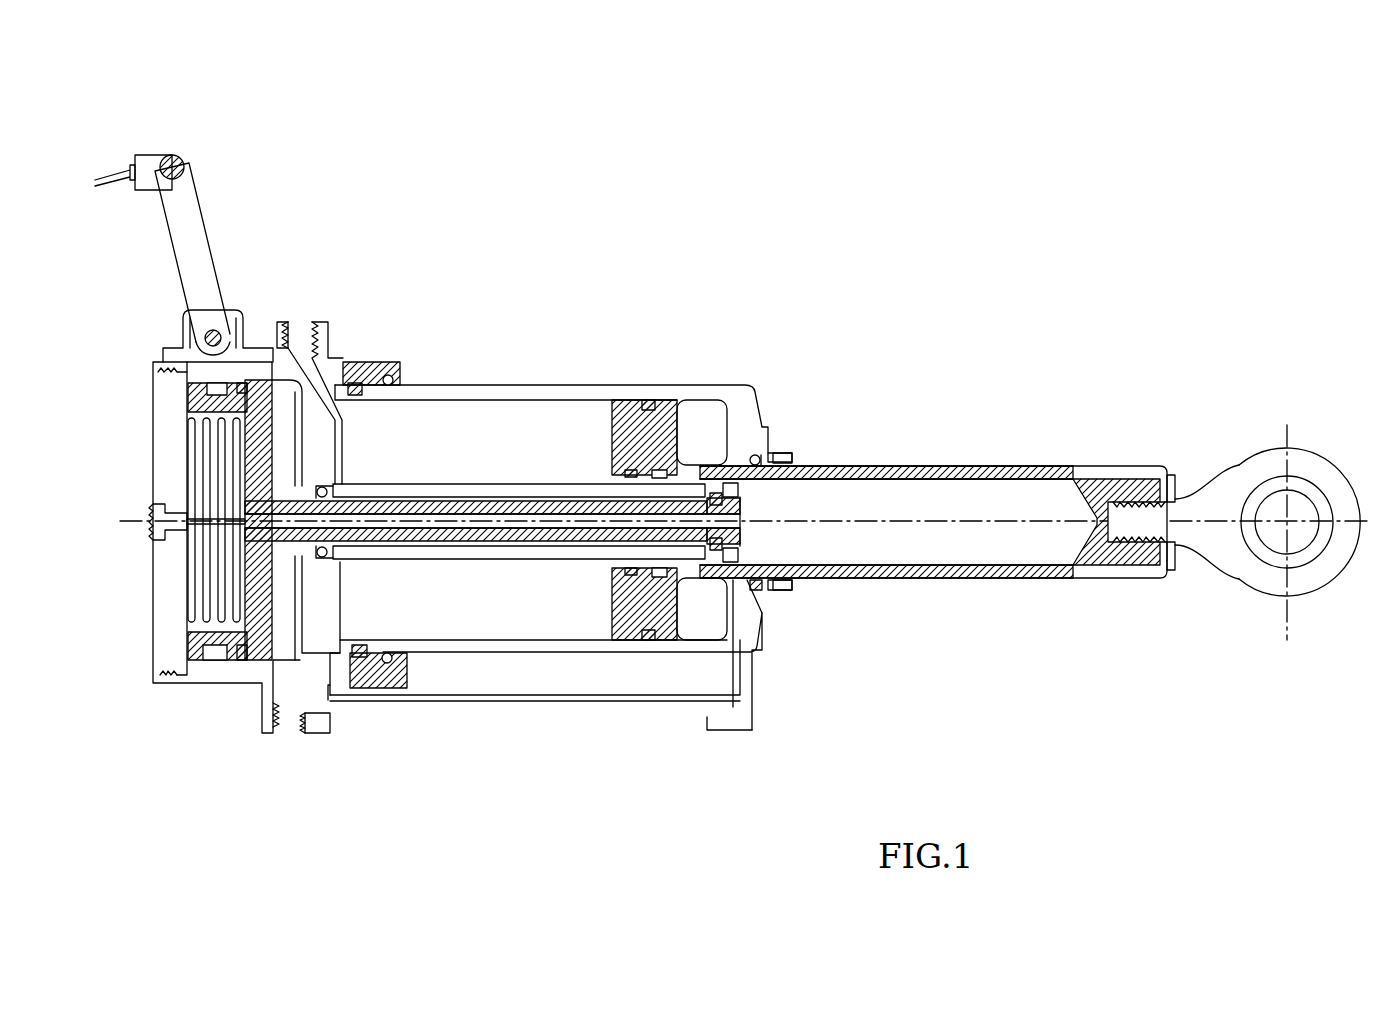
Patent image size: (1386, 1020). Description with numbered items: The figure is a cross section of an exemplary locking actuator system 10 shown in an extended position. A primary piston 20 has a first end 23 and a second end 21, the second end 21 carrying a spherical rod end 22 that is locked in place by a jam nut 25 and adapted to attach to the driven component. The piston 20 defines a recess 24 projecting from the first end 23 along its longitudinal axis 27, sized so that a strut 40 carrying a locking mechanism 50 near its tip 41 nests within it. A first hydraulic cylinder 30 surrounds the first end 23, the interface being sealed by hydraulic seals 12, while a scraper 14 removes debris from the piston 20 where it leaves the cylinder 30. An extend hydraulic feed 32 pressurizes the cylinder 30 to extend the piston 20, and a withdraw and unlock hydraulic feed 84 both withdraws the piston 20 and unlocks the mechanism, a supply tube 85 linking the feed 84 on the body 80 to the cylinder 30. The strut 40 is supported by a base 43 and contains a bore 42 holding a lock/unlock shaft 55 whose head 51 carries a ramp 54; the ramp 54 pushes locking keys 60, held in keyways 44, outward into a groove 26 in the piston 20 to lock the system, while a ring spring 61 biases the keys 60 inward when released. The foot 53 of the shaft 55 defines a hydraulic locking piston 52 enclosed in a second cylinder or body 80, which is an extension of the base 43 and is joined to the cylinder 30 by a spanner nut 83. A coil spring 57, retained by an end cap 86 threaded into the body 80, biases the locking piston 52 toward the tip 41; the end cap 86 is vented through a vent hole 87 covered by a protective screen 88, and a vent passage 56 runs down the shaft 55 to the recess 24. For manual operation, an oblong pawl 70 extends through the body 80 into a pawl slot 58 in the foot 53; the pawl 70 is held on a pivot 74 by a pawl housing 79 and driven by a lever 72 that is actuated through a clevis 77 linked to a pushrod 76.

The locking actuator system 10 is at (742, 206).
The hydraulic seals 12 is at (645, 398).
The scraper 14 is at (790, 455).
The primary piston 20 is at (940, 580).
The second end 21 is at (1167, 622).
The spherical rod end 22 is at (1312, 452).
The first end 23 is at (600, 418).
The recess 24 is at (950, 468).
The jam nut 25 is at (1173, 483).
The groove 26 is at (657, 460).
The longitudinal axis 27 is at (1010, 525).
The first hydraulic cylinder 30 is at (458, 385).
The extend hydraulic feed 32 is at (318, 325).
The strut 40 is at (452, 567).
The tip 41 is at (762, 556).
The bore 42 is at (387, 488).
The base 43 is at (342, 630).
The keyways 44 is at (714, 486).
The locking mechanism 50 is at (567, 547).
The head 51 is at (762, 492).
The hydraulic locking piston 52 is at (270, 632).
The foot 53 is at (238, 485).
The ramp 54 is at (600, 553).
The lock/unlock shaft 55 is at (455, 508).
The vent passage 56 is at (507, 520).
The coil spring 57 is at (205, 440).
The pawl slot 58 is at (200, 405).
The locking keys 60 is at (737, 457).
The ring spring 61 is at (742, 522).
The oblong pawl 70 is at (183, 322).
The lever 72 is at (205, 215).
The pivot 74 is at (222, 332).
The pushrod 76 is at (112, 168).
The clevis 77 is at (160, 150).
The pawl housing 79 is at (229, 305).
The body 80 is at (205, 690).
The spanner nut 83 is at (362, 357).
The withdraw and unlock hydraulic feed 84 is at (296, 742).
The supply tube 85 is at (455, 705).
The end cap 86 is at (153, 655).
The vent hole 87 is at (158, 500).
The protective screen 88 is at (158, 548).